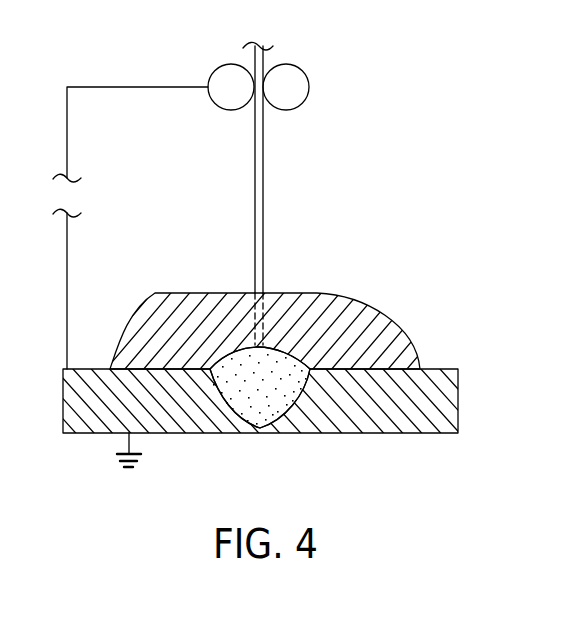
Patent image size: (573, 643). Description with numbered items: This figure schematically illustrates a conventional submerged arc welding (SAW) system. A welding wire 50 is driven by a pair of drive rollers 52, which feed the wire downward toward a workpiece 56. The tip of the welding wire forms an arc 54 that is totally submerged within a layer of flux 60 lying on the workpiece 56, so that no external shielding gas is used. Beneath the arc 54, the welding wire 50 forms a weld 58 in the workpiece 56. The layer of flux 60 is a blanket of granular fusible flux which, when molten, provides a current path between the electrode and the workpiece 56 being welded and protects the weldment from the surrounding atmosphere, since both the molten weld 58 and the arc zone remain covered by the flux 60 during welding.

The welding wire 50 is at (263, 194).
The drive rollers 52 is at (309, 87).
The arc 54 is at (252, 313).
The workpiece 56 is at (443, 397).
The weld 58 is at (272, 410).
The layer of flux 60 is at (390, 316).